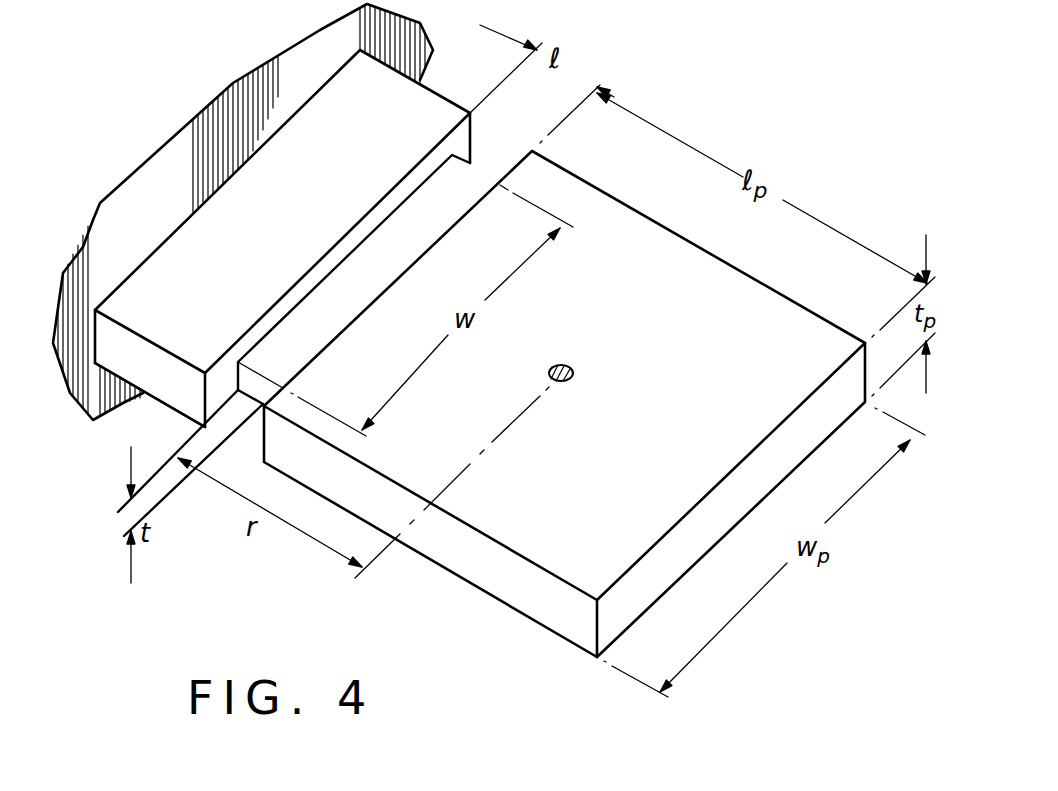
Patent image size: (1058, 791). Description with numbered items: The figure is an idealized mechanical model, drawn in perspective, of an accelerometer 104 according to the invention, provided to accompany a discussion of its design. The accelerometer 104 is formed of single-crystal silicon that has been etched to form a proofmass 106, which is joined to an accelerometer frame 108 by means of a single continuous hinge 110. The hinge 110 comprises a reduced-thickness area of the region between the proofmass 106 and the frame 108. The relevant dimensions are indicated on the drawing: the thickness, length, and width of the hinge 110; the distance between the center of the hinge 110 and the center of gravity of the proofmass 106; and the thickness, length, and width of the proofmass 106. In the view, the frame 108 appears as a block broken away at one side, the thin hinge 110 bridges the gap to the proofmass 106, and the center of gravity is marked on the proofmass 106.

The accelerometer 104 is at (712, 124).
The proofmass 106 is at (553, 555).
The accelerometer frame 108 is at (203, 232).
The hinge 110 is at (457, 184).